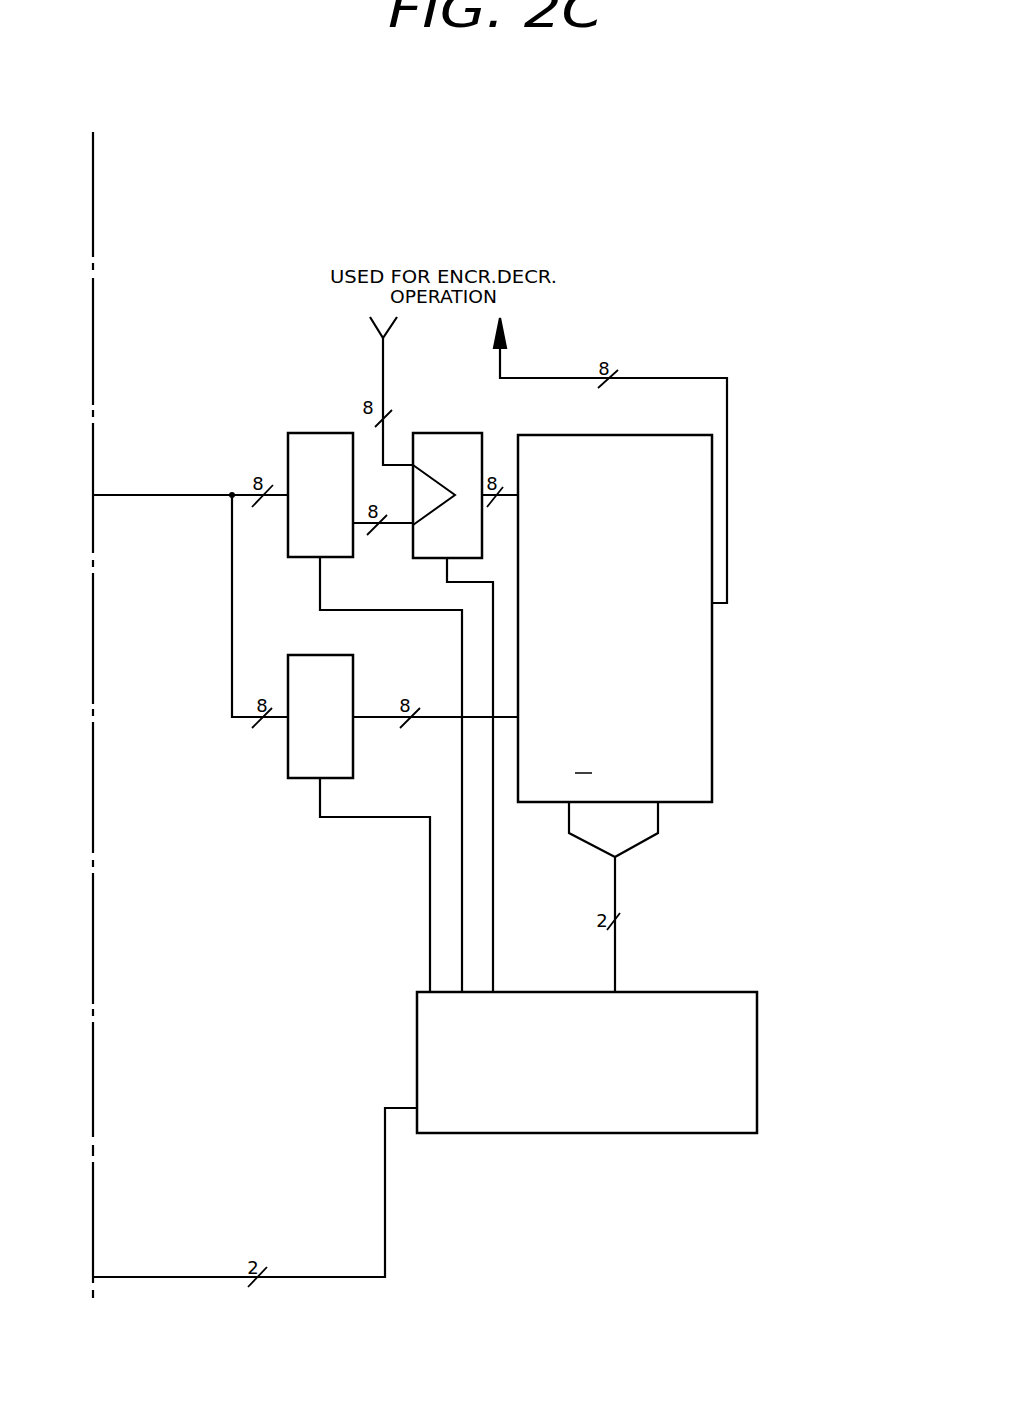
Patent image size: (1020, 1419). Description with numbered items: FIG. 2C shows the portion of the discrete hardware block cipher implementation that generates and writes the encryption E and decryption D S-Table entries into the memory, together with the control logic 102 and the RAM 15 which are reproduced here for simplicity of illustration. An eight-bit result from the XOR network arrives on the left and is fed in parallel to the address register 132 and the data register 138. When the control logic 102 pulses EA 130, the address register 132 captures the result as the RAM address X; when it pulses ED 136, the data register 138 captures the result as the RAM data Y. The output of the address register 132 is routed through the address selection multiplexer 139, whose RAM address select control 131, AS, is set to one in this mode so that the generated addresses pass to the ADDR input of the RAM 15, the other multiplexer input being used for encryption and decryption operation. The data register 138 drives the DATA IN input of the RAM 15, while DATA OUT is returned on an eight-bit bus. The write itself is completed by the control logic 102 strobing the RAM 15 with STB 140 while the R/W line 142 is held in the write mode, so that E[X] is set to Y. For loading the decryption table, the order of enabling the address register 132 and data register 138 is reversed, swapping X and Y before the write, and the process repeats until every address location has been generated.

The address register 132 is at (337, 432).
The address selection multiplexer 139 is at (465, 432).
The RAM 15 is at (643, 434).
The EA 130 is at (400, 610).
The RAM address select control 131 is at (473, 583).
The data register 138 is at (327, 654).
The ED 136 is at (402, 817).
The R/W line 142 is at (593, 850).
The STB 140 is at (637, 850).
The control logic 102 is at (587, 992).